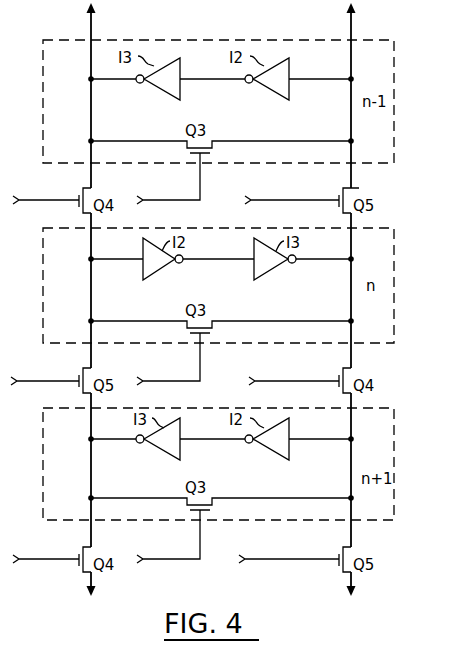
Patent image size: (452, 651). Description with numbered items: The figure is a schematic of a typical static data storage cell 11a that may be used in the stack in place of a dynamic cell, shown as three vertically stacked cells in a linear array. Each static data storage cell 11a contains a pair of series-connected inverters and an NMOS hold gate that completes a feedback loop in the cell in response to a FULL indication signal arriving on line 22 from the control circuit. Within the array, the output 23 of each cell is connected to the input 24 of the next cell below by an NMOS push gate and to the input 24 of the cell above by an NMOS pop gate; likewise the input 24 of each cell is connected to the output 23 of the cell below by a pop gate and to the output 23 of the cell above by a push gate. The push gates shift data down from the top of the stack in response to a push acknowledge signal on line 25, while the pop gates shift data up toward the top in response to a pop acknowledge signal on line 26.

The static data storage cell 11a is at (394, 40).
The line 22 is at (168, 368).
The output 23 is at (215, 258).
The input 24 is at (218, 255).
The line 25 is at (176, 376).
The line 26 is at (175, 383).